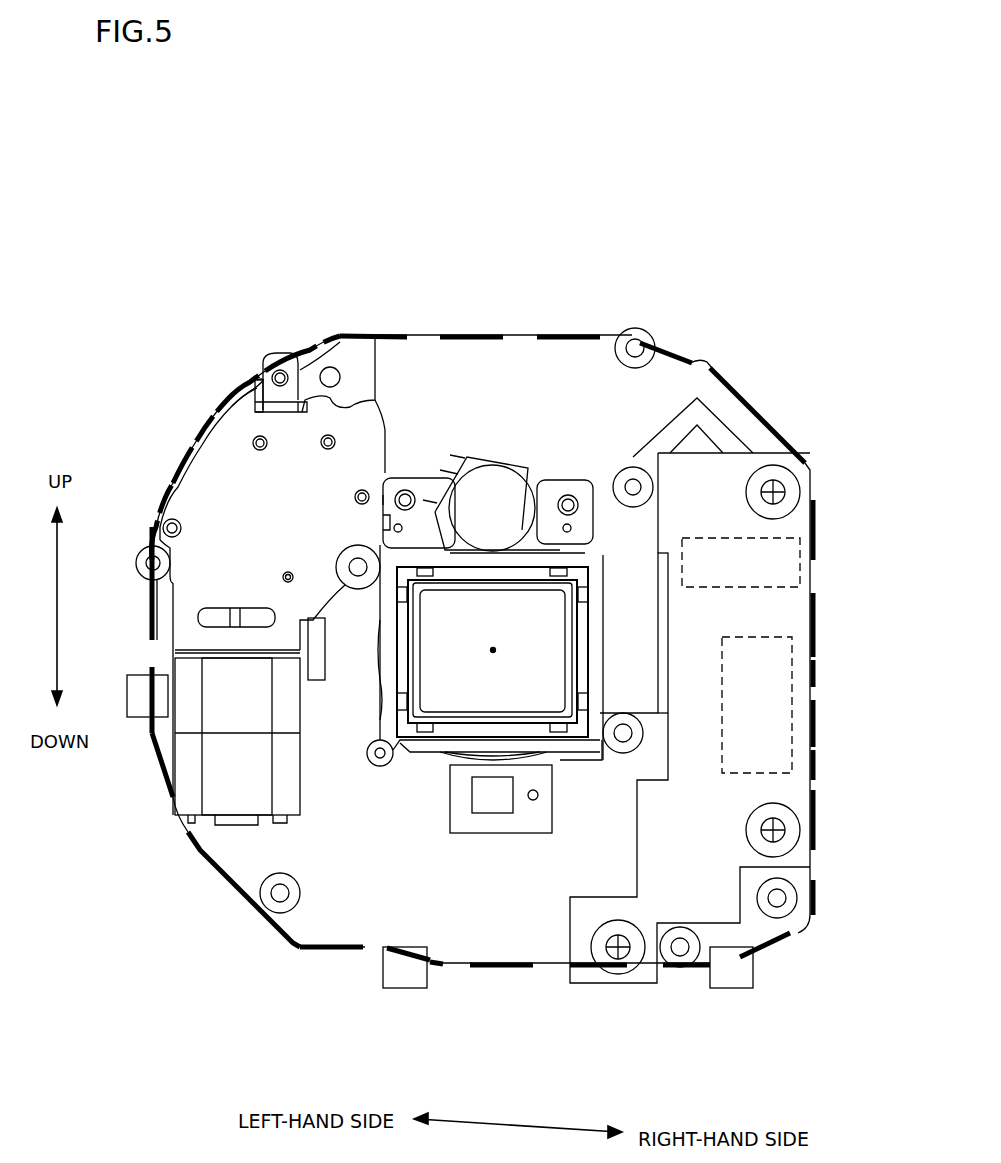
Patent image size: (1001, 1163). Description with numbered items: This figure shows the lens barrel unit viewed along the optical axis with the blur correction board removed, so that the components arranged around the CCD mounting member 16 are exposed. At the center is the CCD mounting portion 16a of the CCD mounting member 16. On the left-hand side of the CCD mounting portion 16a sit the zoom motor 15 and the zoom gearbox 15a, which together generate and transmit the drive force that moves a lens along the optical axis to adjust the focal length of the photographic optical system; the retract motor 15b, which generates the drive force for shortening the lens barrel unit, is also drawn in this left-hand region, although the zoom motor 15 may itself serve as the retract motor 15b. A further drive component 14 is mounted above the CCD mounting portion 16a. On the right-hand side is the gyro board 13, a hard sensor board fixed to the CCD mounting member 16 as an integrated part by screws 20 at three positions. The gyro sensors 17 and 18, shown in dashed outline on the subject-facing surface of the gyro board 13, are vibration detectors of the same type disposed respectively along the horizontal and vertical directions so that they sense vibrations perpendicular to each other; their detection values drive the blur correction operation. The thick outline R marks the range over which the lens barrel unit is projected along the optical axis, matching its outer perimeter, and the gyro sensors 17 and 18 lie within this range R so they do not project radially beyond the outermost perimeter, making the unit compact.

The range R is at (468, 336).
The gyro board 13 is at (795, 620).
The drive motor 14 is at (493, 492).
The zoom motor 15 is at (190, 795).
The zoom gearbox 15a is at (218, 466).
The retract motor 15b is at (227, 683).
The CCD mounting member 16 is at (741, 421).
The CCD mounting portion 16a is at (388, 682).
The gyro sensor 17 is at (783, 565).
The gyro sensor 18 is at (778, 712).
The screws 20 is at (790, 487).